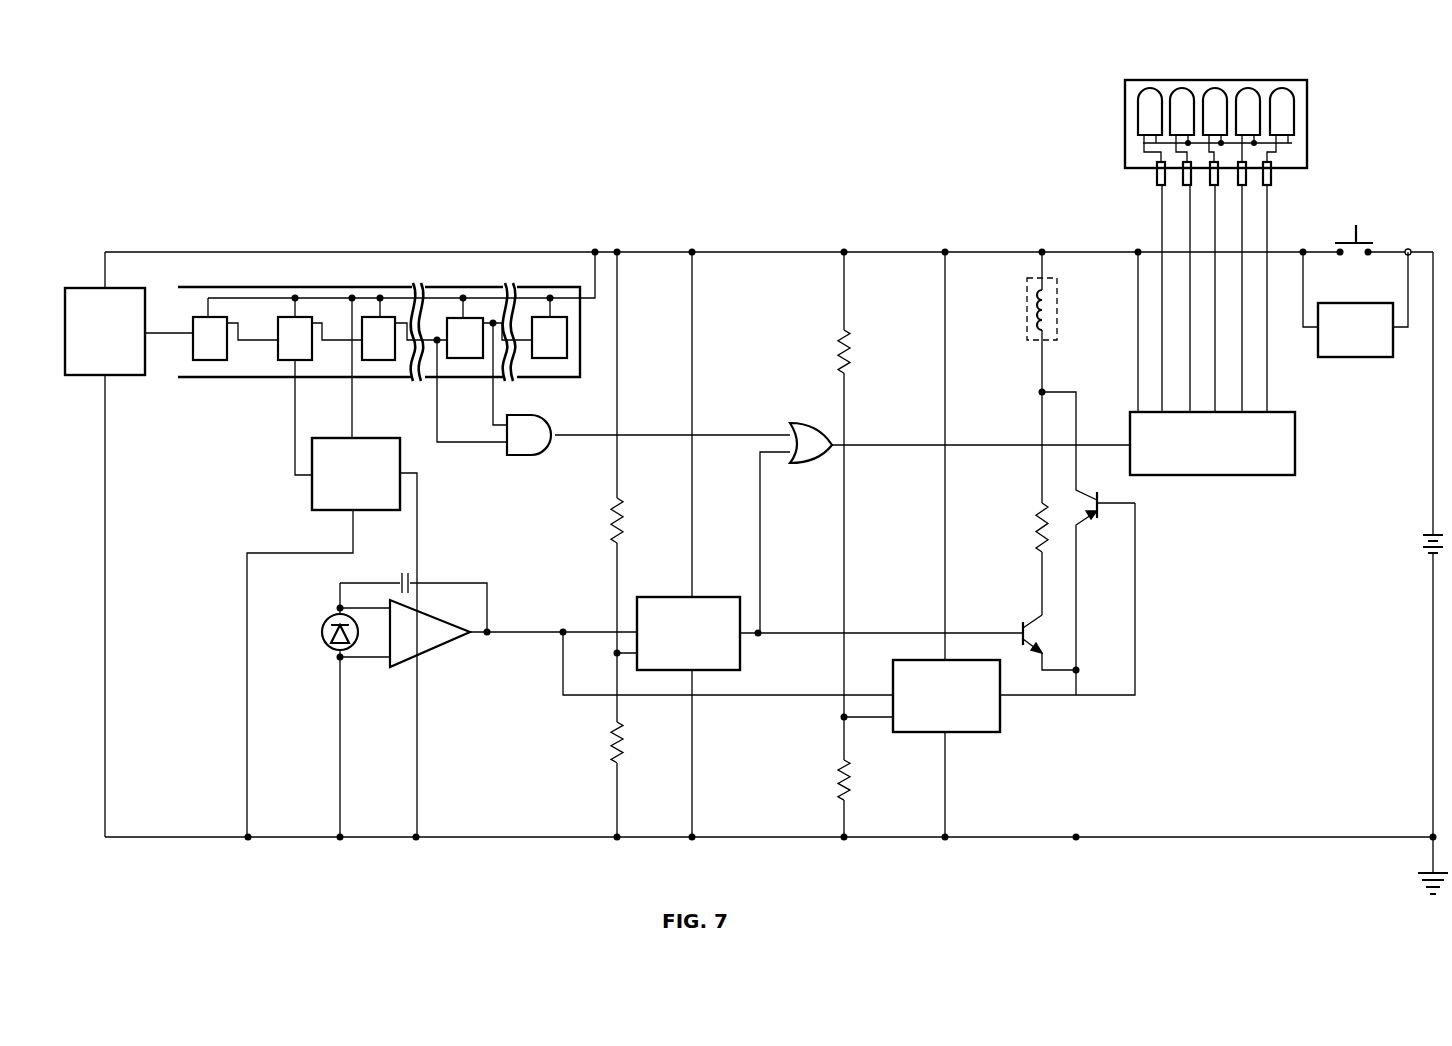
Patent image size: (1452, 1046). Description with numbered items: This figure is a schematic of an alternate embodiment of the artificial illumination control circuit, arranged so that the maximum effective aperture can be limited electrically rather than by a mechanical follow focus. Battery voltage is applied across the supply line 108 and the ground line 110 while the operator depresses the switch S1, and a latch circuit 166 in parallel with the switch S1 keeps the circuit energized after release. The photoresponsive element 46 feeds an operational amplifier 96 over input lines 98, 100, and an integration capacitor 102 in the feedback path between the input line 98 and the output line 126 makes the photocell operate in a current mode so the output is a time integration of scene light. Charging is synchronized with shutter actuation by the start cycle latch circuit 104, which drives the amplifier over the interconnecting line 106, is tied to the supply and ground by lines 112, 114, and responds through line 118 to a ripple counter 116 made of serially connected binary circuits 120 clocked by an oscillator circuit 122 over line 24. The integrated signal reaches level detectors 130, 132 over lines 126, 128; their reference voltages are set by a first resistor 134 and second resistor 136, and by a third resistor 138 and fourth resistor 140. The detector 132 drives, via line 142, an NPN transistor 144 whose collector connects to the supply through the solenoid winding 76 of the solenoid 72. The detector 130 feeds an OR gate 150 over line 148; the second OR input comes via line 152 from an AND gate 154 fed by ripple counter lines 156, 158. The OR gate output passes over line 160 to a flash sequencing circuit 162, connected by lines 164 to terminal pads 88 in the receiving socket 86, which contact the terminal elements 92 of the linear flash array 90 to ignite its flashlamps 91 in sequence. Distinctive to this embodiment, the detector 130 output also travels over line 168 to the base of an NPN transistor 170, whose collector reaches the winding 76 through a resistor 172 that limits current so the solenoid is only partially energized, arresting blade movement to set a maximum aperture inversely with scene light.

The oscillator output line 24 is at (159, 334).
The photoresponsive element 46 is at (322, 635).
The solenoid 72 is at (1027, 318).
The solenoid winding 76 is at (1034, 298).
The flash array receiving socket 86 is at (1307, 166).
The terminal pads 88 is at (1268, 181).
The linear flash array 90 is at (1250, 133).
The flashlamps 91 is at (1282, 96).
The terminal elements 92 is at (1271, 166).
The amplifier 96 is at (432, 660).
The input line 98 is at (345, 608).
The input line 100 is at (370, 660).
The integration capacitor 102 is at (400, 580).
The start cycle latch circuit 104 is at (312, 490).
The interconnecting line 106 is at (417, 567).
The supply line 108 is at (770, 252).
The ground line 110 is at (505, 837).
The line 112 is at (353, 420).
The line 114 is at (247, 735).
The ripple counter 116 is at (386, 291).
The interconnecting line 118 is at (295, 396).
The binary circuits 120 is at (290, 318).
The oscillator circuit 122 is at (118, 378).
The output line 126 is at (495, 633).
The interconnecting line 128 is at (736, 696).
The level detector 130 is at (741, 661).
The level detector 132 is at (976, 733).
The first resistor 134 is at (597, 454).
The second resistor 136 is at (610, 746).
The third resistor 138 is at (838, 351).
The fourth resistor 140 is at (838, 786).
The interconnecting line 142 is at (1135, 607).
The NPN transistor 144 is at (1090, 497).
The line 148 is at (760, 507).
The OR gate 150 is at (804, 424).
The interconnecting line 152 is at (692, 436).
The AND gate 154 is at (548, 421).
The line 156 is at (492, 405).
The line 158 is at (462, 443).
The interconnecting line 160 is at (1011, 446).
The flash sequencing circuit 162 is at (1195, 476).
The lines 164 is at (1267, 367).
The latch circuit 166 is at (1356, 358).
The line 168 is at (916, 633).
The NPN transistor 170 is at (1031, 622).
The resistor 172 is at (1038, 526).
The switch S1 is at (1362, 240).